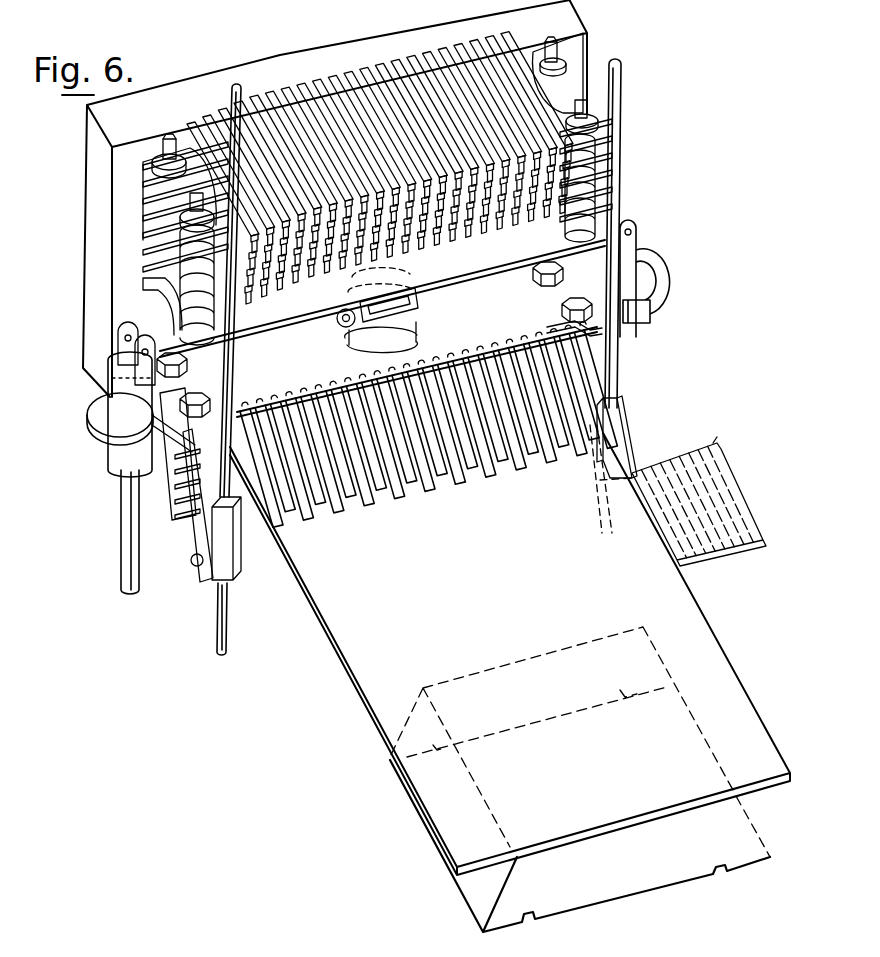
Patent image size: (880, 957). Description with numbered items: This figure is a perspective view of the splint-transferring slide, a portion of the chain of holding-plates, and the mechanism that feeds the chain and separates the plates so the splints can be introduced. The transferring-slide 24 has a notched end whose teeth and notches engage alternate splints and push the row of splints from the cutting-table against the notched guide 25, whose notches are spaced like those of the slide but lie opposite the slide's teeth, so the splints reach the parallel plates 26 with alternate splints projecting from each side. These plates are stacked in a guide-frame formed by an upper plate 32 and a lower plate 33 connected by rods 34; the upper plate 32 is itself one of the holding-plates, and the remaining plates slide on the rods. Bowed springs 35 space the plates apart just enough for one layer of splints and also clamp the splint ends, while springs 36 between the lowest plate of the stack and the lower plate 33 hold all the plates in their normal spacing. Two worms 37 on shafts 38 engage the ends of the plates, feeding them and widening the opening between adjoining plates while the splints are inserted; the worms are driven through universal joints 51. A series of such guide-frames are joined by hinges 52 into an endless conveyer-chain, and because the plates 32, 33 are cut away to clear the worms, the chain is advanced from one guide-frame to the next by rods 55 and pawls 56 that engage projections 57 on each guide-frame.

The transferring-slide 24 is at (318, 614).
The notched guide 25 is at (90, 197).
The parallel plates 26 is at (150, 172).
The upper plate 32 is at (292, 384).
The lower plate 33 is at (150, 289).
The rods 34 is at (171, 143).
The bowed springs 35 is at (555, 99).
The springs 36 is at (180, 334).
The worms 37 is at (90, 418).
The shafts 38 is at (118, 528).
The universal joints 51 is at (123, 339).
The hinges 52 is at (411, 321).
The rods 55 is at (231, 641).
The pawls 56 is at (193, 537).
The projections 57 is at (566, 318).